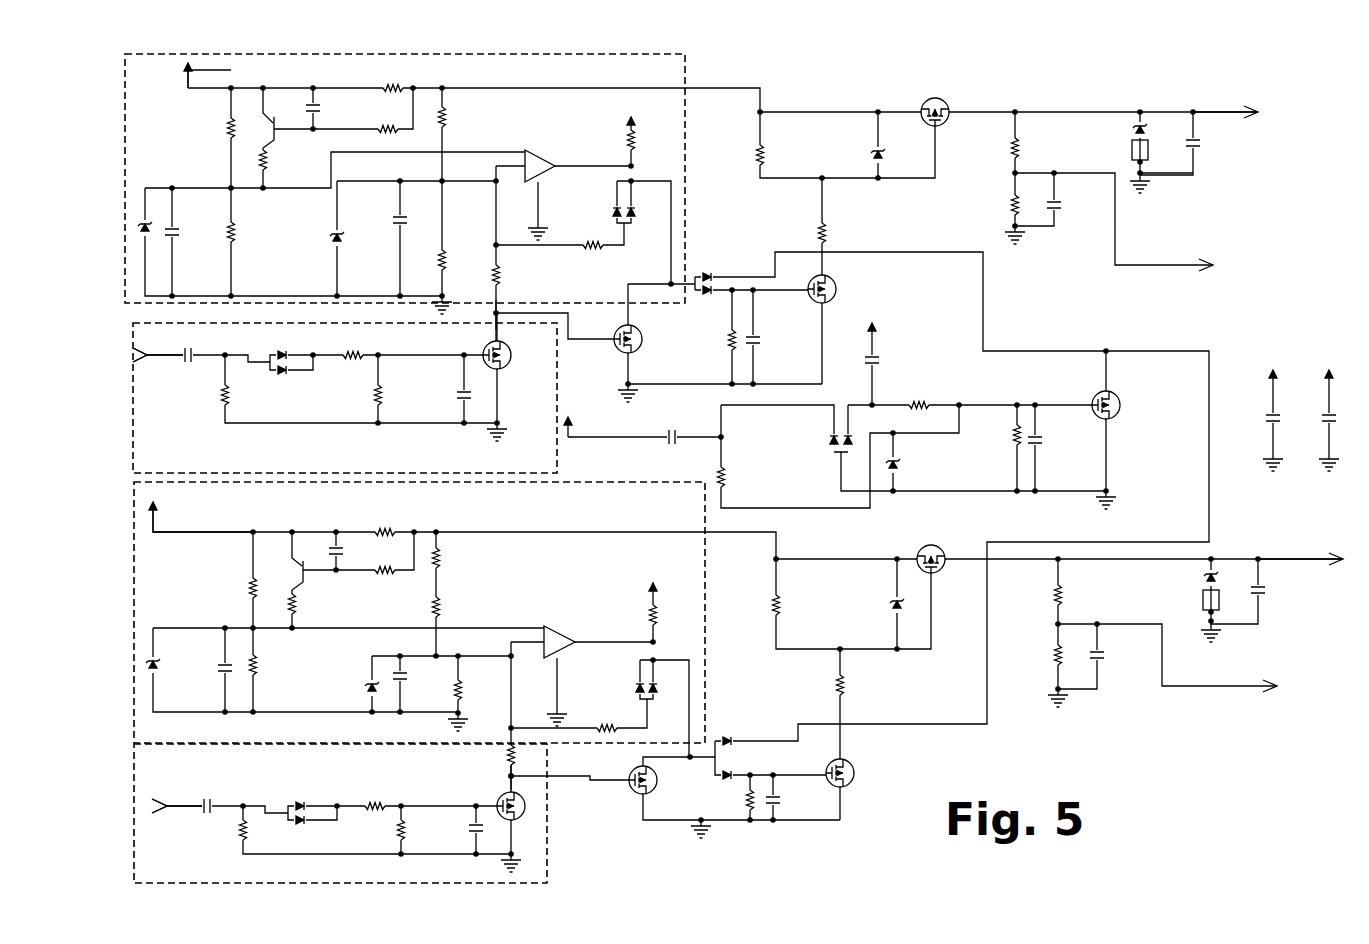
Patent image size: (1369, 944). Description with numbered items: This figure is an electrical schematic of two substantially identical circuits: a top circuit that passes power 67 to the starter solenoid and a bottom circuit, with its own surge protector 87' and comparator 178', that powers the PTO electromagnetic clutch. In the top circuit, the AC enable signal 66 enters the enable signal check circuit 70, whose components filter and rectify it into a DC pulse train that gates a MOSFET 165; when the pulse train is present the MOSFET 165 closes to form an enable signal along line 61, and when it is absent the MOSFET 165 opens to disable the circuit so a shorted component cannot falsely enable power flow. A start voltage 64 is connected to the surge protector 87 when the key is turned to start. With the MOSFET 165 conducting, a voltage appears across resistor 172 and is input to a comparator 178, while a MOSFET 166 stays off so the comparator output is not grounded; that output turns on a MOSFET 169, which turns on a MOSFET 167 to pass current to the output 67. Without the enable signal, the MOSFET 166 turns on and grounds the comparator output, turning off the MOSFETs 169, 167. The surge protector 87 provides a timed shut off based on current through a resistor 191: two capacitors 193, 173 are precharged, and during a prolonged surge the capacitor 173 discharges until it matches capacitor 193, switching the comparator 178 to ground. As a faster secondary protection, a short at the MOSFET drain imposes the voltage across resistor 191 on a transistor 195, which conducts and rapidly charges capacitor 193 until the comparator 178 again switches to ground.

The start voltage 64 is at (204, 87).
The resistor 191 is at (392, 86).
The transistor 195 is at (265, 140).
The capacitor 193 is at (178, 235).
The capacitor 173 is at (396, 221).
The resistor 172 is at (491, 272).
The comparator 178 is at (566, 152).
The surge protector 87 is at (436, 178).
The AC enable signal 66 is at (166, 358).
The MOSFET 165 is at (504, 367).
The line 61 is at (497, 328).
The enable signal check circuit 70 is at (557, 447).
The MOSFET 166 is at (642, 333).
The MOSFET 167 is at (946, 101).
The MOSFET 169 is at (836, 282).
The output 67 is at (1221, 110).
The surge protector 87' is at (441, 612).
The comparator 178' is at (585, 624).